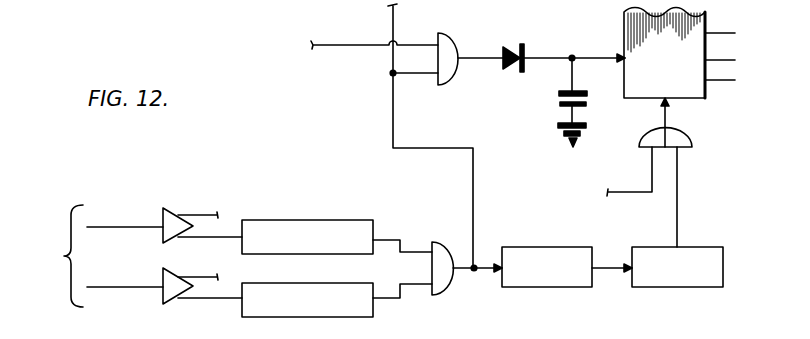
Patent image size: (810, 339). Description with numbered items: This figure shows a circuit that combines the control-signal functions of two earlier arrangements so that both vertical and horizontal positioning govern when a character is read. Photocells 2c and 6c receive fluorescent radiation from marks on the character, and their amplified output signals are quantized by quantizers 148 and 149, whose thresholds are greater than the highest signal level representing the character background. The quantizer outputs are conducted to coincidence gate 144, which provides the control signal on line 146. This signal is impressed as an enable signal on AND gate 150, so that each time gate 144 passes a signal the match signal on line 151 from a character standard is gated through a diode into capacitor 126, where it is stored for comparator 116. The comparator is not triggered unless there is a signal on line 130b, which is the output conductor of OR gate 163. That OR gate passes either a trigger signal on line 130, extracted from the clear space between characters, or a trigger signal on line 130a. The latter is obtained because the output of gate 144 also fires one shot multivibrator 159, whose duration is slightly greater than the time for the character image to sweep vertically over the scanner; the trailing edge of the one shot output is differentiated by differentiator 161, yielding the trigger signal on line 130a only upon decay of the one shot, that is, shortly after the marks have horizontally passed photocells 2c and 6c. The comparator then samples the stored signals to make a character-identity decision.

The photocell 2c is at (125, 215).
The photocell 6c is at (125, 276).
The quantizer 148 is at (273, 220).
The quantizer 149 is at (273, 283).
The coincidence gate 144 is at (436, 242).
The one shot multivibrator 159 is at (533, 246).
The differentiator 161 is at (725, 268).
The trigger signal line 130 is at (632, 195).
The trigger signal line 130a is at (680, 228).
The output line of OR gate 130b is at (668, 118).
The OR gate 163 is at (690, 150).
The comparator 116 is at (672, 52).
The control signal line 146 is at (418, 147).
The match signal line 151 is at (329, 45).
The AND gate 150 is at (453, 48).
The capacitor 126 is at (558, 105).